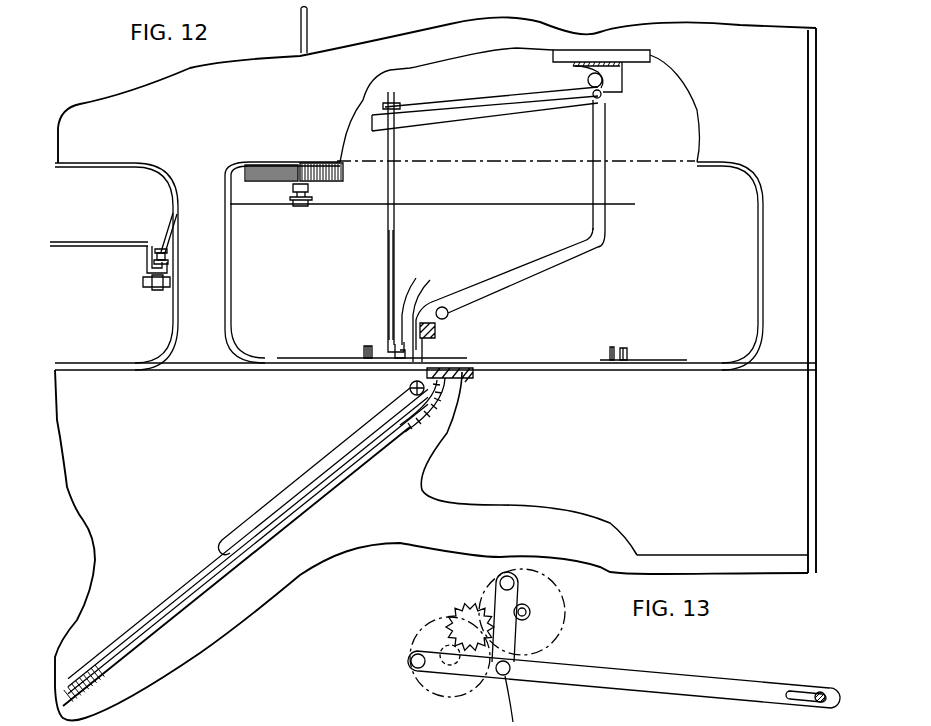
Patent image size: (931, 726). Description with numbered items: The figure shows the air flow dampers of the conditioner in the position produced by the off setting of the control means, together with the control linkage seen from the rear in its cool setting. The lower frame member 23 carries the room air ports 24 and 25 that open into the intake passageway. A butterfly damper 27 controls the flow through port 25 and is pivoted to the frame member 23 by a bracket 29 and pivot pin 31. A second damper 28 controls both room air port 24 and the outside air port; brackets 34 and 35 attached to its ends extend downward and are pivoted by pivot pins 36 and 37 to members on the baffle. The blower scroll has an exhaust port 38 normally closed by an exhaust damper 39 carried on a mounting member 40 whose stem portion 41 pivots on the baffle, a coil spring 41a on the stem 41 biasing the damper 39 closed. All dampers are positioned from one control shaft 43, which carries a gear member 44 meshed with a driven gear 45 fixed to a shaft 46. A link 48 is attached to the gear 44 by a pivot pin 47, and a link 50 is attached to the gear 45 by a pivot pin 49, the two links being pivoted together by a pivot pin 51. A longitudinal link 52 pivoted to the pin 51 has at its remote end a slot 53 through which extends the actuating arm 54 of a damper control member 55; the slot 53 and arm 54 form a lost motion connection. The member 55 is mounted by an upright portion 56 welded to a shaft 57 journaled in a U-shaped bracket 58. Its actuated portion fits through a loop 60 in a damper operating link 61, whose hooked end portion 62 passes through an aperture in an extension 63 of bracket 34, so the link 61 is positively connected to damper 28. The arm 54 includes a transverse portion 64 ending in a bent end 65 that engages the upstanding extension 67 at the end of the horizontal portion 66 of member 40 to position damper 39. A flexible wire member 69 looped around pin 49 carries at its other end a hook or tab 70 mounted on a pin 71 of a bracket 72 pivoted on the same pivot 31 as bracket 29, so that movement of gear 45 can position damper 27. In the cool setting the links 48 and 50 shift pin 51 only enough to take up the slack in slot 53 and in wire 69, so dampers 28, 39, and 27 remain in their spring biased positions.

In FIG. 12, the lower frame member 23 is at (195, 97).
In FIG. 12, the room air intake port 24 is at (722, 178).
In FIG. 12, the room air intake port 25 is at (84, 174).
In FIG. 12, the damper 27 is at (97, 242).
In FIG. 12, the damper 28 is at (548, 360).
In FIG. 12, the bracket 29 is at (146, 262).
In FIG. 12, the pivot pin 31 is at (158, 290).
In FIG. 12, the bracket 34 is at (388, 347).
In FIG. 12, the bracket 35 is at (612, 350).
In FIG. 12, the pivot pin 36 is at (362, 348).
In FIG. 12, the pivot pin 37 is at (628, 350).
In FIG. 12, the exhaust port 38 is at (400, 428).
In FIG. 12, the exhaust damper 39 is at (175, 600).
In FIG. 12, the mounting member 40 is at (332, 455).
In FIG. 12, the stem portion 41 is at (446, 398).
In FIG. 12, the coil spring 41a is at (448, 378).
In FIG. 12, the shaft 43 is at (308, 18).
In FIG. 13, the shaft 43 is at (531, 612).
In FIG. 12, the gear member 44 is at (320, 165).
In FIG. 13, the gear member 44 is at (561, 584).
In FIG. 12, the gear 45 is at (265, 163).
In FIG. 13, the gear 45 is at (420, 630).
In FIG. 13, the shaft 46 is at (455, 618).
In FIG. 13, the pivot pin 47 is at (500, 583).
In FIG. 13, the link 48 is at (515, 625).
In FIG. 13, the pivot pin 49 is at (412, 668).
In FIG. 13, the link 50 is at (466, 667).
In FIG. 13, the pivot pin 51 is at (518, 701).
In FIG. 12, the link 52 is at (462, 204).
In FIG. 13, the link 52 is at (620, 692).
In FIG. 13, the slot 53 is at (805, 690).
In FIG. 12, the actuating arm 54 is at (514, 159).
In FIG. 13, the actuating arm 54 is at (822, 691).
In FIG. 12, the damper control member 55 is at (622, 151).
In FIG. 12, the upright portion 56 is at (604, 97).
In FIG. 12, the shaft 57 is at (612, 90).
In FIG. 12, the U-shaped bracket 58 is at (622, 70).
In FIG. 12, the loop 60 is at (394, 150).
In FIG. 12, the damper operating link 61 is at (396, 255).
In FIG. 12, the hooked end portion 62 is at (406, 300).
In FIG. 12, the extension 63 is at (418, 298).
In FIG. 12, the transverse portion 64 is at (545, 262).
In FIG. 12, the bent end 65 is at (437, 335).
In FIG. 12, the horizontal portion 66 is at (428, 347).
In FIG. 12, the upstanding extension 67 is at (449, 312).
In FIG. 12, the flexible wire member 69 is at (162, 240).
In FIG. 12, the hook or tab 70 is at (170, 250).
In FIG. 12, the pin 71 is at (170, 258).
In FIG. 12, the bracket 72 is at (172, 272).